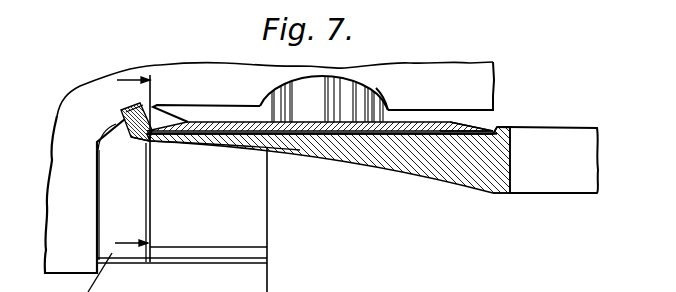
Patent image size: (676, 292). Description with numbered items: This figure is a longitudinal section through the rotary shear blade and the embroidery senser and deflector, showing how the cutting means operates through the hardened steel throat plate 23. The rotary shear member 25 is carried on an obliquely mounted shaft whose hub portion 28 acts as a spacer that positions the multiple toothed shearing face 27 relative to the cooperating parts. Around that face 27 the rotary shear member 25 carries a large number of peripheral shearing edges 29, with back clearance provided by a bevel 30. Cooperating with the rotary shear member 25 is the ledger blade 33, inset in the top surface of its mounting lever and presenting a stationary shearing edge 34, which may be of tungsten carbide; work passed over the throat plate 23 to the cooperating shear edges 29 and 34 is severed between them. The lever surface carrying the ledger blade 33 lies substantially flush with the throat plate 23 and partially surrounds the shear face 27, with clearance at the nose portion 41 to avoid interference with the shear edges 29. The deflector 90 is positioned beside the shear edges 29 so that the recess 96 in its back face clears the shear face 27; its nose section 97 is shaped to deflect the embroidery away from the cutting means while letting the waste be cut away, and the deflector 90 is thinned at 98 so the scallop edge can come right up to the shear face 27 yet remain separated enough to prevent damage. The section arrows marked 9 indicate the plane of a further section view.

The throat plate 23 is at (472, 72).
The rotary shear member 25 is at (334, 122).
The shearing face 27 is at (371, 136).
The hub portion 28 is at (381, 101).
The peripheral shearing edges 29 is at (173, 127).
The bevel 30 is at (465, 125).
The ledger blade 33 is at (158, 181).
The stationary shearing edge 34 is at (151, 75).
The nose portion 41 is at (124, 133).
The embroidery senser and deflector 90 is at (572, 130).
The recess 96 is at (495, 128).
The nose section 97 is at (143, 143).
The thinned portion 98 is at (203, 146).
The section arrows 9- 9 is at (132, 161).